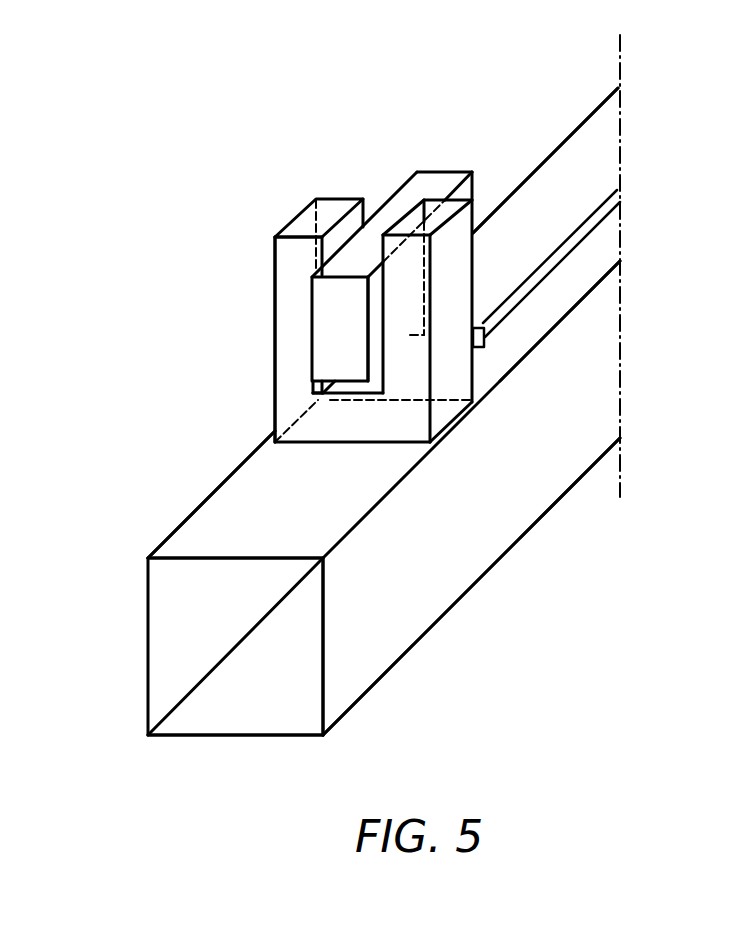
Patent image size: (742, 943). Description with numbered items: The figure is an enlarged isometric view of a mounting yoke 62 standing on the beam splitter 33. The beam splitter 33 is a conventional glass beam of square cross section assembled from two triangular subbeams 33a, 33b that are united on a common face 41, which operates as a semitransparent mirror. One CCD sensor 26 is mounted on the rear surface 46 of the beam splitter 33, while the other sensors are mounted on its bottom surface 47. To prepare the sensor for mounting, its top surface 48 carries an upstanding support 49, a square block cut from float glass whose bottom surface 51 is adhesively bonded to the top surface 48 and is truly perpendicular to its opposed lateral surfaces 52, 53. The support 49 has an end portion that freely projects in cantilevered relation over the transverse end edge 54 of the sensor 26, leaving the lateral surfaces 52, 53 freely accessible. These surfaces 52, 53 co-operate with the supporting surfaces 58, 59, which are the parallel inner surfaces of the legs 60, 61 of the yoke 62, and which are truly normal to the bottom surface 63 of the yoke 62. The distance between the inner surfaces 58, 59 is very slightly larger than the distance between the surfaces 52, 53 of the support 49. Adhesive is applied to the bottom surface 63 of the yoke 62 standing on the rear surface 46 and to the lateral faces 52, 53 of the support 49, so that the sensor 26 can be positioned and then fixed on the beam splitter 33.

The CCD sensor 26 is at (620, 195).
The beam splitter 33 is at (335, 431).
The triangular subbeam 33a is at (173, 650).
The triangular subbeam 33b is at (262, 700).
The common face 41 is at (268, 613).
The rear surface of beam splitter 46 is at (215, 522).
The bottom surface of beam splitter 47 is at (477, 553).
The top surface of CCD sensor 48 is at (573, 168).
The upstanding support 49 is at (428, 274).
The bottom surface of support 51 is at (333, 396).
The lateral surface of support 52 is at (312, 338).
The lateral surface of support 53 is at (372, 328).
The transverse end edge of CCD sensor 54 is at (487, 347).
The supporting surface 58 is at (342, 232).
The supporting surface 59 is at (402, 220).
The leg of yoke 60 is at (288, 305).
The leg of yoke 61 is at (455, 283).
The yoke 62 is at (277, 250).
The bottom surface of yoke 63 is at (348, 428).